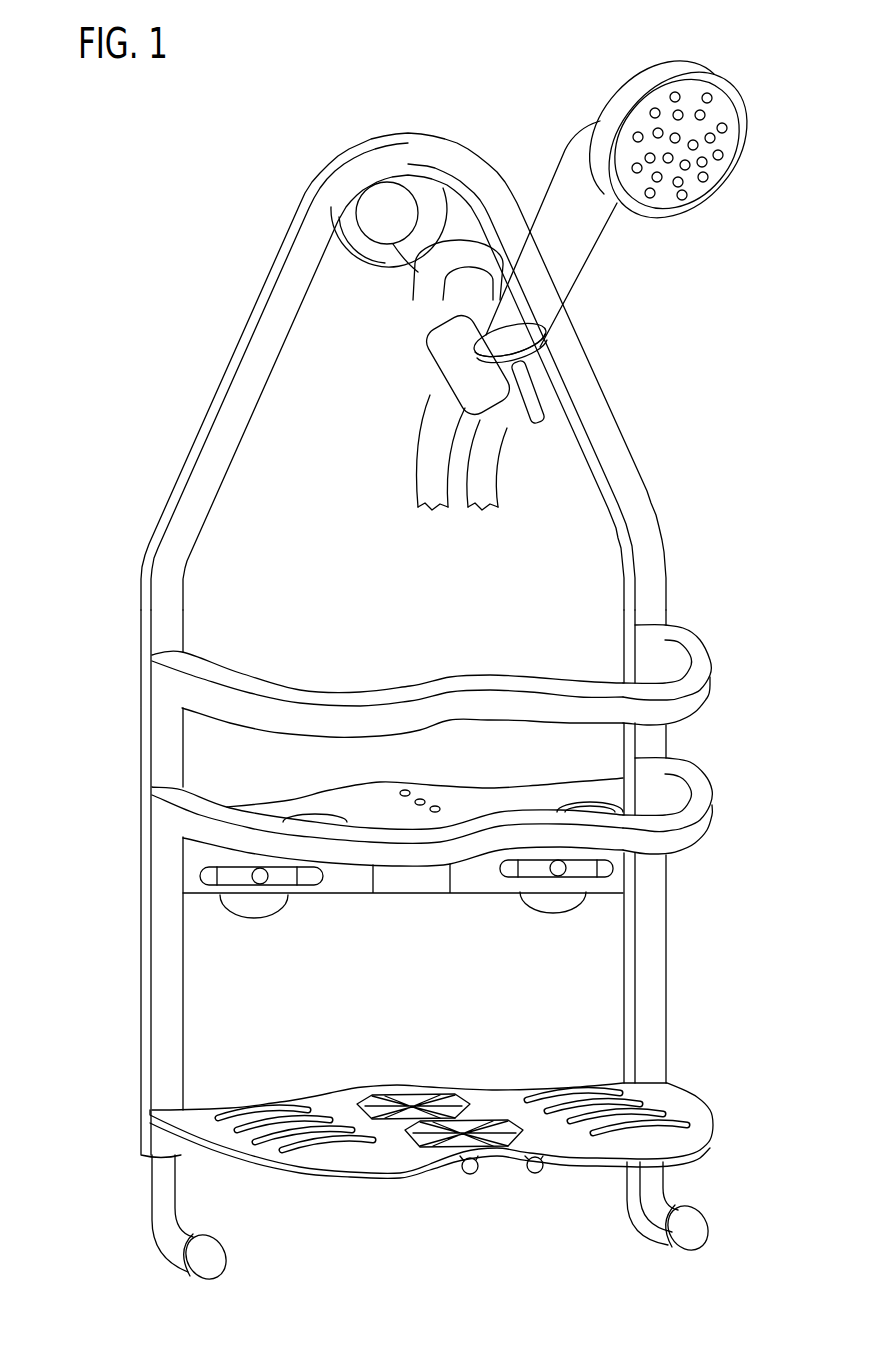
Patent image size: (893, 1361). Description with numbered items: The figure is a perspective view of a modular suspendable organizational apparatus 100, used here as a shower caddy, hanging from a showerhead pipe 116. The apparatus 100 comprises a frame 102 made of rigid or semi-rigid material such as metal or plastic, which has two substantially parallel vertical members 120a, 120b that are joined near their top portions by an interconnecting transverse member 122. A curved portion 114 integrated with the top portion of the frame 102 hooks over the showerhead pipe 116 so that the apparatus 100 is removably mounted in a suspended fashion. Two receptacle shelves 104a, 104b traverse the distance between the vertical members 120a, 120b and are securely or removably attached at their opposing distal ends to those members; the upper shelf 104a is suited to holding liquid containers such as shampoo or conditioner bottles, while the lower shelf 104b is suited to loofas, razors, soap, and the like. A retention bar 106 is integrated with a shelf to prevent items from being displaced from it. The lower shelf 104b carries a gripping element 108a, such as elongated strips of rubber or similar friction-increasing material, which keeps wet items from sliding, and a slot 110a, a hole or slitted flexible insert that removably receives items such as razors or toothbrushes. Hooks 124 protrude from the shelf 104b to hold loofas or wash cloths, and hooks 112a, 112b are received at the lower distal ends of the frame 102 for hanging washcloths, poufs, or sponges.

The modular suspendable organizational apparatus 100 is at (203, 189).
The frame 102 is at (167, 615).
The shelf 104a is at (163, 808).
The shelf 104b is at (248, 1150).
The retention bar 106 is at (163, 680).
The gripping element 108a is at (572, 1102).
The slot 110a is at (412, 1107).
The hook 112a is at (150, 1238).
The hook 112b is at (632, 1205).
The curved portion 114 is at (398, 150).
The showerhead pipe 116 is at (415, 208).
The vertical member 120a is at (130, 970).
The vertical member 120b is at (678, 970).
The interconnecting transverse member 122 is at (237, 324).
The hook 124 is at (470, 1166).